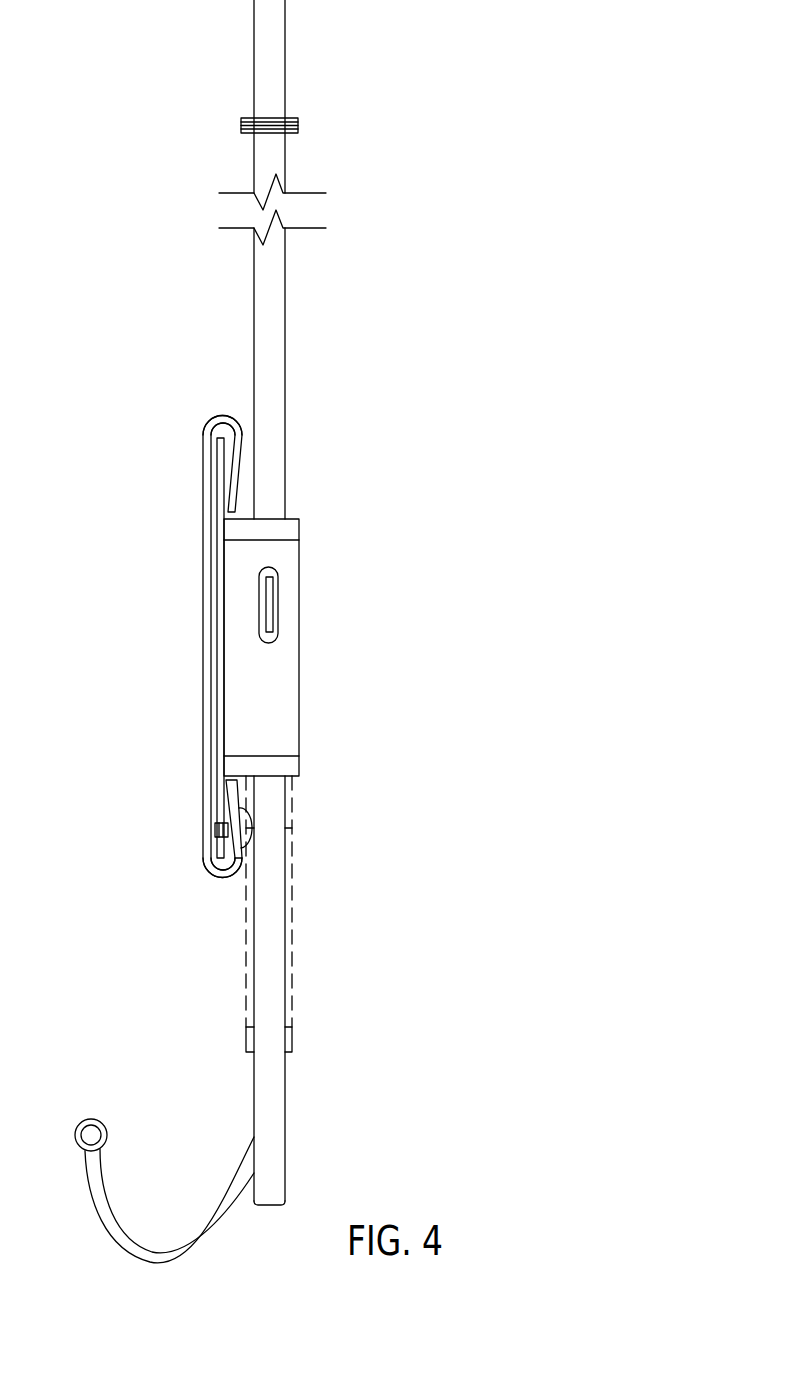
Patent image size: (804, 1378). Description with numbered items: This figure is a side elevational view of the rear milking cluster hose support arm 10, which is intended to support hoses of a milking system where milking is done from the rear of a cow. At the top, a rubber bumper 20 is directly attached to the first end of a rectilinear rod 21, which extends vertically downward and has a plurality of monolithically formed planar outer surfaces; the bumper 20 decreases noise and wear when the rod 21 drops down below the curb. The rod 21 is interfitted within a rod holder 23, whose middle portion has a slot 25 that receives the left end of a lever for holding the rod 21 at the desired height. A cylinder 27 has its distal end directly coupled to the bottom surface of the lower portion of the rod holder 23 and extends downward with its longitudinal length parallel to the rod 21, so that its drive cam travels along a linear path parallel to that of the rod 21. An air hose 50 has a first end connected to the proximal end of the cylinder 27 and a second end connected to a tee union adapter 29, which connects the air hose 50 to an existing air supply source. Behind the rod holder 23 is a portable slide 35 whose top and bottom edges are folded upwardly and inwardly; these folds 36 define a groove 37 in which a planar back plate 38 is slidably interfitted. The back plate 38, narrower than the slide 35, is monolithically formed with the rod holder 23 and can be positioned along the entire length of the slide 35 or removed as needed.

The rear milking cluster hose support arm 10 is at (597, 342).
The rubber bumper 20 is at (298, 132).
The rectilinear rod 21 is at (268, 348).
The rod holder 23 is at (280, 712).
The slot 25 is at (278, 572).
The cylinder 27 is at (285, 938).
The tee union adapter 29 is at (87, 1117).
The portable slide 35 is at (203, 620).
The folds 36 is at (224, 424).
The groove 37 is at (225, 428).
The planar back plate 38 is at (222, 447).
The air hose 50 is at (185, 1243).